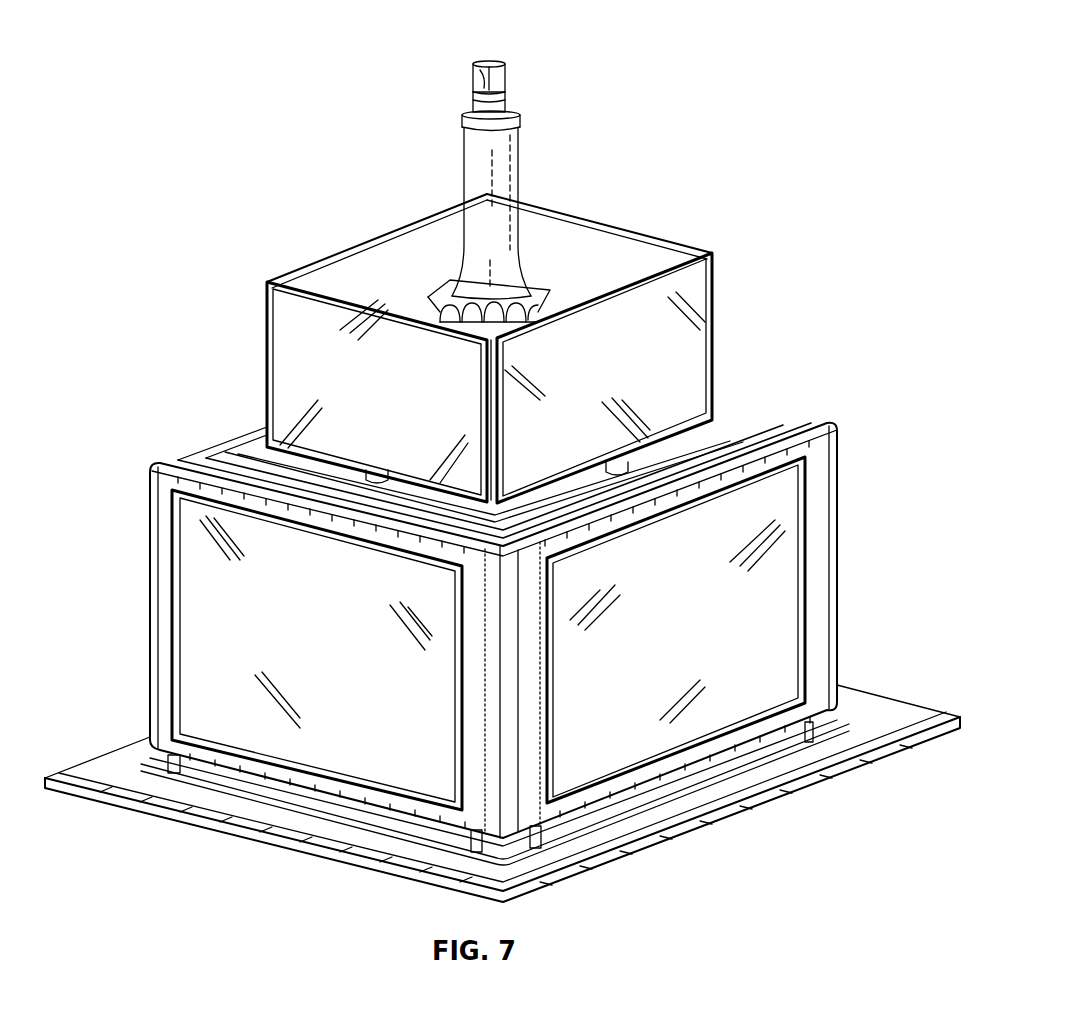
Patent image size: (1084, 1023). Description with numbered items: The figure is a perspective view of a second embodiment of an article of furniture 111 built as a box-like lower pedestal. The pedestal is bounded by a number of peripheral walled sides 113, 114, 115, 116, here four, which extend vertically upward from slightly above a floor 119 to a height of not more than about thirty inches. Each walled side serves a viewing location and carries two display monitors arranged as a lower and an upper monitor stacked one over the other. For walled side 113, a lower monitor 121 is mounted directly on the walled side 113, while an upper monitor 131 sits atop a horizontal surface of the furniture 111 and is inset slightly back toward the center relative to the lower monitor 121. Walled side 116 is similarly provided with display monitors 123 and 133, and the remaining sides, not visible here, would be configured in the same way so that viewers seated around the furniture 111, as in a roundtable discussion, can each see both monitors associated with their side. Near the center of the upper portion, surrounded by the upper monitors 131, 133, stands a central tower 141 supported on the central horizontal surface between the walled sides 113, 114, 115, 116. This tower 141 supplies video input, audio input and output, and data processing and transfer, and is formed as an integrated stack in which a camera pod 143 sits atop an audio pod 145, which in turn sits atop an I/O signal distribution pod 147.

The furniture 111 is at (737, 72).
The walled side 113 is at (824, 470).
The walled side 114 is at (792, 405).
The walled side 115 is at (253, 428).
The walled side 116 is at (166, 488).
The floor 119 is at (105, 762).
The lower monitor 121 is at (676, 630).
The display monitor 123 is at (317, 650).
The upper monitor 131 is at (599, 348).
The display monitor 133 is at (377, 348).
The central tower 141 is at (508, 182).
The camera pod 143 is at (503, 66).
The audio pod 145 is at (500, 108).
The I/O signal distribution pod 147 is at (540, 312).